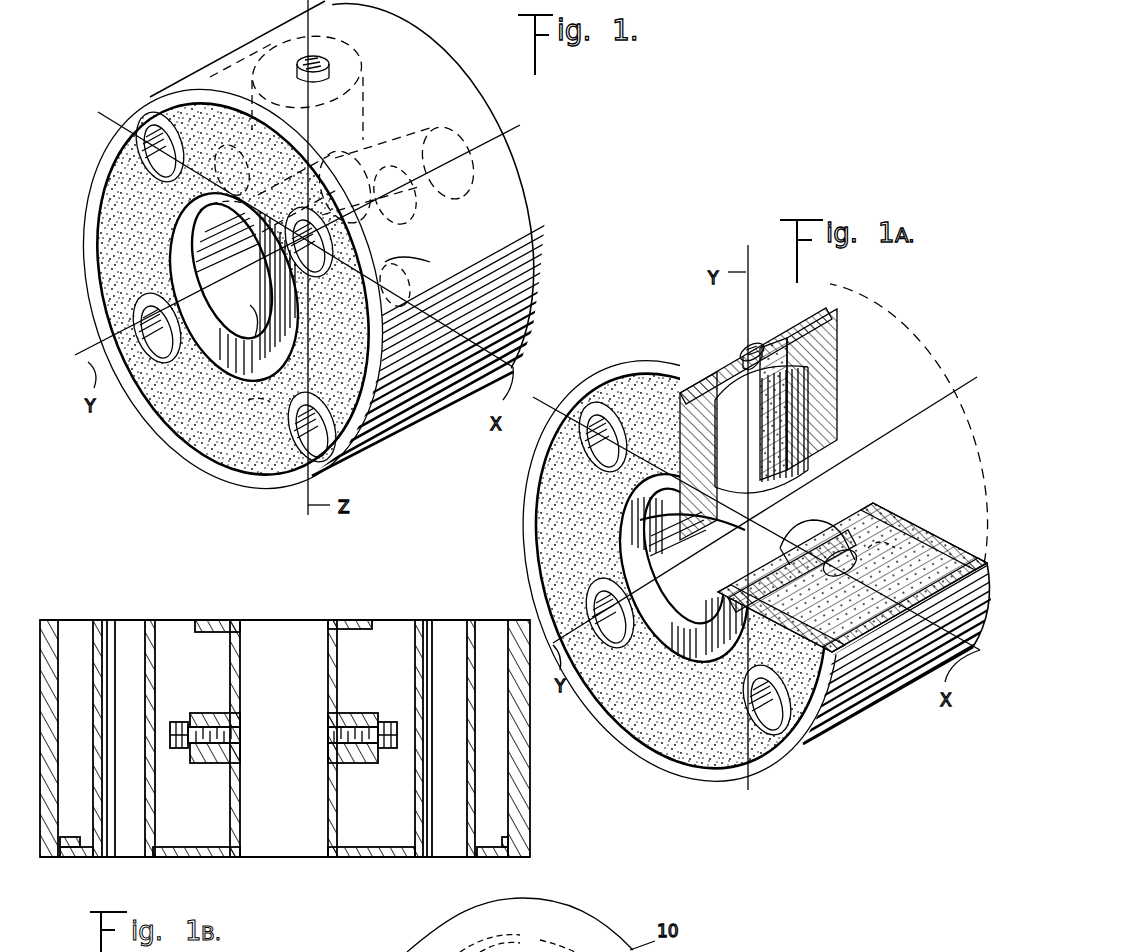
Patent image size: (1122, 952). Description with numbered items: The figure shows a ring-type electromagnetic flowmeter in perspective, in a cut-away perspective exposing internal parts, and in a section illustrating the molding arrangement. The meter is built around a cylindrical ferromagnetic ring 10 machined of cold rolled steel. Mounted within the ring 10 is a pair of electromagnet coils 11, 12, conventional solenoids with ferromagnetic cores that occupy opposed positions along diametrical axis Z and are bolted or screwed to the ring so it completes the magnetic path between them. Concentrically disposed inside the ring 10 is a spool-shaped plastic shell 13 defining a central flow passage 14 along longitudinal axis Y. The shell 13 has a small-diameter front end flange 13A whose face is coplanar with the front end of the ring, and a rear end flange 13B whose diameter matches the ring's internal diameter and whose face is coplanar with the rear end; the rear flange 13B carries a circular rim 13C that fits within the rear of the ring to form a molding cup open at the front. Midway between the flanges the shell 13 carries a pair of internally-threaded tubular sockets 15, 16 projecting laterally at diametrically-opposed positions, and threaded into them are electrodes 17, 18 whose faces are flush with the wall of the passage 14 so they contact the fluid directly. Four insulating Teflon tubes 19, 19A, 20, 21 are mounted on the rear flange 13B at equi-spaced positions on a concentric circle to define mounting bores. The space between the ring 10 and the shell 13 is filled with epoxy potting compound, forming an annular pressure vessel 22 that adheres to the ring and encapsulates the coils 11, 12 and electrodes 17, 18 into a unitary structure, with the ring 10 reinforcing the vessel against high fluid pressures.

In FIG. 1, the cylindrical ferromagnetic ring 10 is at (458, 105).
In FIG. 1A, the cylindrical ferromagnetic ring 10 is at (672, 330).
In FIG. 1B, the cylindrical ferromagnetic ring 10 is at (530, 800).
In FIG. 1, the electromagnet coil 11 is at (355, 108).
In FIG. 1A, the electromagnet coil 11 is at (822, 360).
In FIG. 1, the electromagnet coil 12 is at (258, 410).
In FIG. 1, the spool-shaped plastic shell 13 is at (233, 286).
In FIG. 1A, the spool-shaped plastic shell 13 is at (699, 645).
In FIG. 1B, the spool-shaped plastic shell 13 is at (328, 783).
In FIG. 1A, the front end flange 13A is at (628, 503).
In FIG. 1B, the front end flange 13A is at (228, 618).
In FIG. 1B, the rear end flange 13B is at (193, 858).
In FIG. 1B, the circular rim 13C is at (78, 858).
In FIG. 1, the central flow passage 14 is at (225, 350).
In FIG. 1A, the central flow passage 14 is at (650, 553).
In FIG. 1B, the central flow passage 14 is at (305, 623).
In FIG. 1, the internally-threaded tubular socket 15 is at (232, 164).
In FIG. 1B, the internally-threaded tubular socket 15 is at (208, 713).
In FIG. 1, the internally-threaded tubular socket 16 is at (395, 196).
In FIG. 1A, the internally-threaded tubular socket 16 is at (822, 535).
In FIG. 1B, the internally-threaded tubular socket 16 is at (360, 713).
In FIG. 1, the electrode 17 is at (417, 276).
In FIG. 1A, the electrode 17 is at (880, 545).
In FIG. 1B, the electrode 17 is at (390, 757).
In FIG. 1, the electrode 18 is at (188, 216).
In FIG. 1B, the electrode 18 is at (178, 752).
In FIG. 1, the tube 19 is at (320, 412).
In FIG. 1A, the tube 19 is at (781, 684).
In FIG. 1B, the tube 19 is at (477, 628).
In FIG. 1, the tube 19A is at (478, 172).
In FIG. 1, the tube 20 is at (160, 362).
In FIG. 1A, the tube 20 is at (622, 645).
In FIG. 1, the tube 21 is at (163, 177).
In FIG. 1A, the tube 21 is at (600, 452).
In FIG. 1B, the tube 21 is at (155, 673).
In FIG. 1, the annular pressure vessel 22 is at (235, 440).
In FIG. 1A, the annular pressure vessel 22 is at (695, 718).